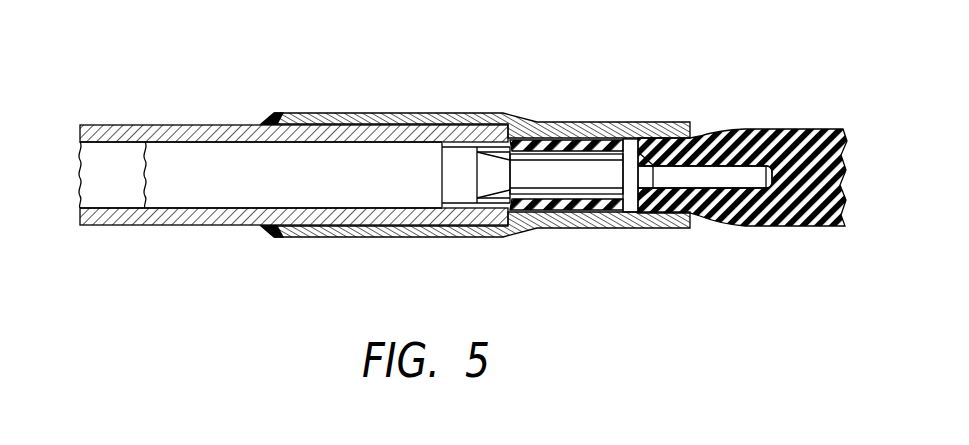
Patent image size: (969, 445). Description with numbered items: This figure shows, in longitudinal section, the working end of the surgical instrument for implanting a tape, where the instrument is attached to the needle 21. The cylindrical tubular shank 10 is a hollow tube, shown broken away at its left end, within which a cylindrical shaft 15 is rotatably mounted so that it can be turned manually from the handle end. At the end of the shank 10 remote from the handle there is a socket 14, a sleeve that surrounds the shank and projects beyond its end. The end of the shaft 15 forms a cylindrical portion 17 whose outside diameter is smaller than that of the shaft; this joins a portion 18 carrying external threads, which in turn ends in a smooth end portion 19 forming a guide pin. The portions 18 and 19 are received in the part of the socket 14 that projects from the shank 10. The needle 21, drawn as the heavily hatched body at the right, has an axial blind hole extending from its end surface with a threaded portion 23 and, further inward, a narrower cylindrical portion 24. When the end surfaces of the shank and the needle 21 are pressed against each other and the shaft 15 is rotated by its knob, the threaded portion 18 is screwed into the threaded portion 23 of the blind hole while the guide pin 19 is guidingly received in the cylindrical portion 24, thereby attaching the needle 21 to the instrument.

The cylindrical tubular shank 10 is at (180, 223).
The socket 14 is at (408, 112).
The cylindrical shaft 15 is at (177, 155).
The cylindrical portion 17 is at (460, 190).
The threaded portion 18 is at (577, 182).
The guide pin 19 is at (722, 188).
The connector body 21 is at (822, 130).
The threaded portion of the blind hole 23 is at (631, 138).
The cylindrical portion of the blind hole 24 is at (773, 168).